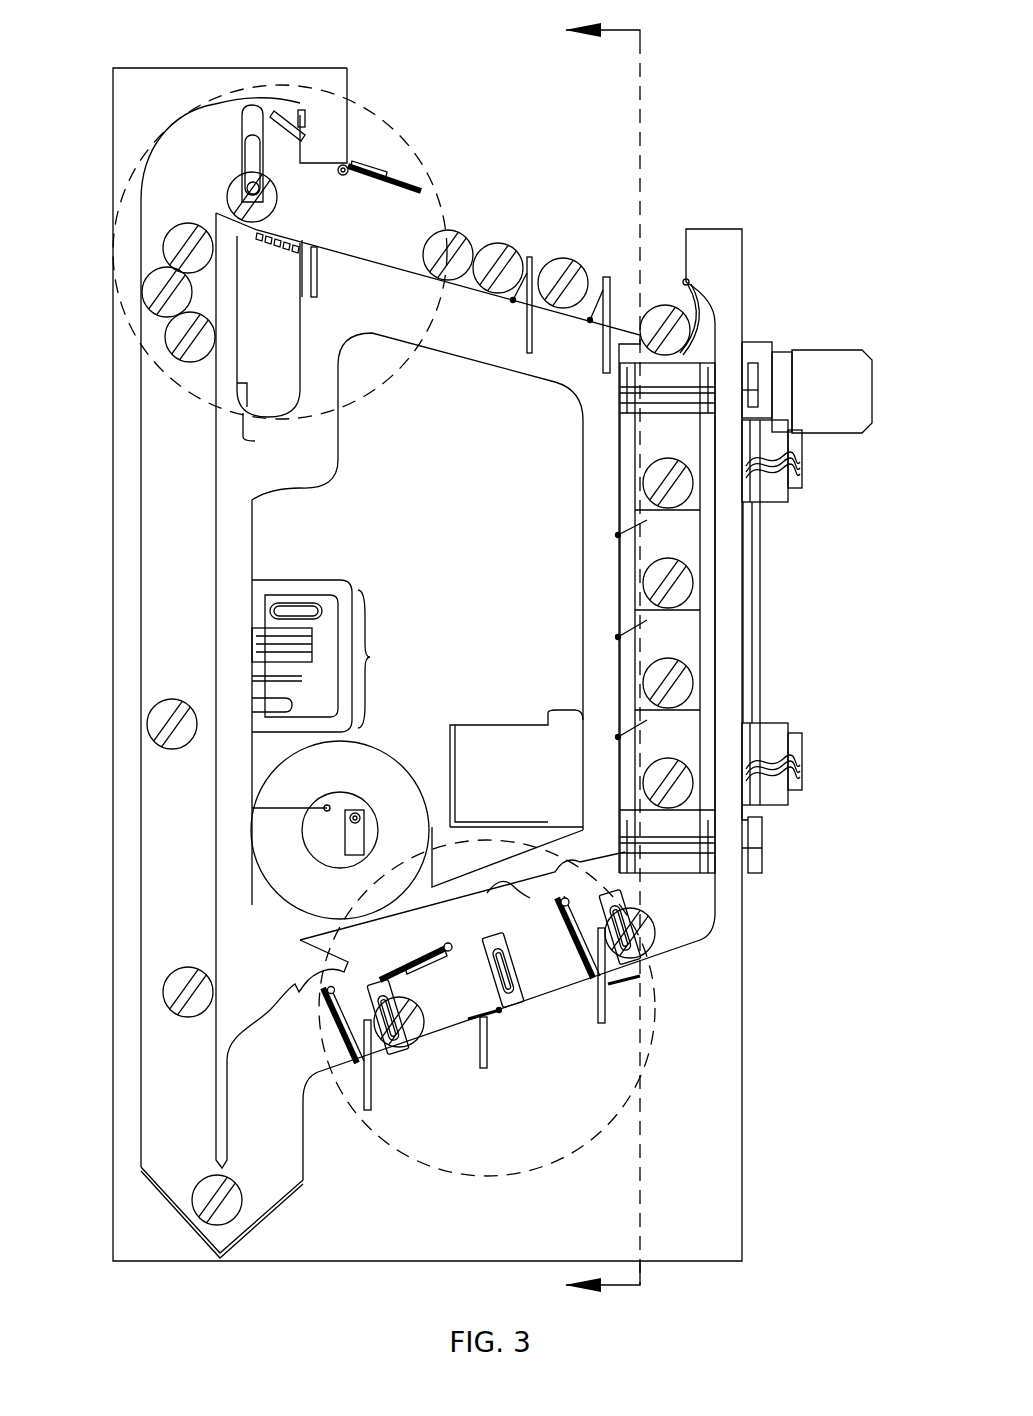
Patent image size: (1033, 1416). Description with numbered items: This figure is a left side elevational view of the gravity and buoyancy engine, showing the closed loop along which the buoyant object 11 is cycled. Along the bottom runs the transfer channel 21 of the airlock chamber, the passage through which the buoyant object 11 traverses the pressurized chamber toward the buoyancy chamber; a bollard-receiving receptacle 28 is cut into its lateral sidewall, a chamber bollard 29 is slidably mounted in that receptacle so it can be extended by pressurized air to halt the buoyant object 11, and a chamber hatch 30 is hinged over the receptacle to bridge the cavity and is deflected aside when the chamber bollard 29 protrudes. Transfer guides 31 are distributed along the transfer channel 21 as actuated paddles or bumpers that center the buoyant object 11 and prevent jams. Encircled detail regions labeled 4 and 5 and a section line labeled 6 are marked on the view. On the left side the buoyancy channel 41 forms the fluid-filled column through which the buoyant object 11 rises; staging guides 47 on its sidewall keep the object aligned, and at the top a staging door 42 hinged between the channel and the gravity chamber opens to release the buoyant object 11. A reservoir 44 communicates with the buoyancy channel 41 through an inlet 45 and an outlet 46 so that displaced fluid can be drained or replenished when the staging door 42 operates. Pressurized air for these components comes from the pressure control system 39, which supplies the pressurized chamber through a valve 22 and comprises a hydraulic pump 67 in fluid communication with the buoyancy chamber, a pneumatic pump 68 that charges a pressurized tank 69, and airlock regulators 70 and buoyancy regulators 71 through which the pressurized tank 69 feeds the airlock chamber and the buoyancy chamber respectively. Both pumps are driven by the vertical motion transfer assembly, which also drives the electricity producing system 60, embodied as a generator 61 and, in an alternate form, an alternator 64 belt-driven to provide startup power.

The detail view region 4 is at (381, 1141).
The detail view region 5 is at (384, 120).
The section line 6 is at (590, 658).
The buoyant object 11 is at (190, 223).
The transfer channel 21 is at (760, 1075).
The valve 22 is at (530, 898).
The bollard-receiving receptacle 28 is at (591, 1021).
The chamber bollard 29 is at (607, 980).
The chamber hatch 30 is at (488, 1017).
The transfer guides 31 is at (500, 948).
The pressure control system 39 is at (352, 580).
The buoyancy channel 41 is at (92, 190).
The staging door 42 is at (395, 196).
The reservoir 44 is at (284, 347).
The inlet 45 is at (255, 441).
The outlet 46 is at (302, 108).
The staging guides 47 is at (252, 110).
The electricity producing system 60 is at (838, 357).
The generator 61 is at (516, 741).
The alternator 64 is at (515, 742).
The hydraulic pump 67 is at (809, 772).
The pneumatic pump 68 is at (809, 462).
The pressurized tank 69 is at (377, 773).
The airlock regulators 70 is at (393, 659).
The buoyancy regulators 71 is at (393, 659).